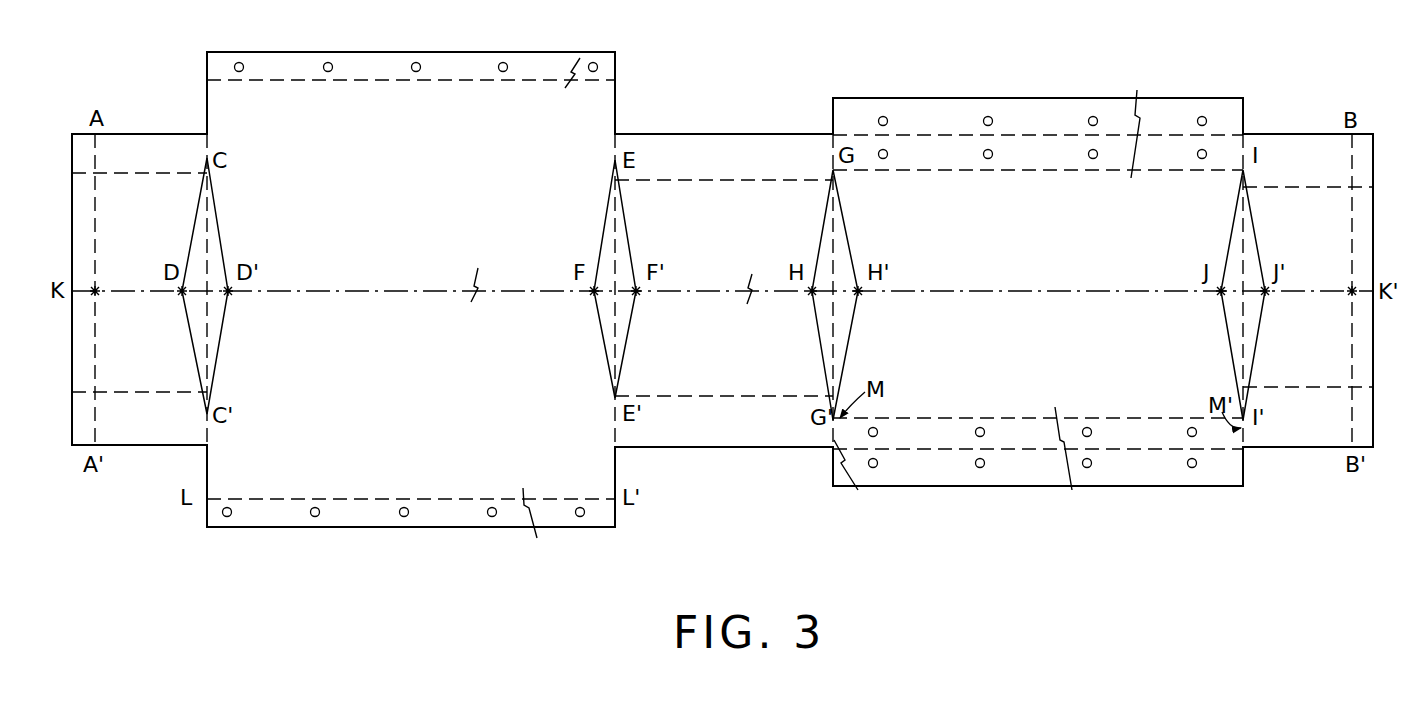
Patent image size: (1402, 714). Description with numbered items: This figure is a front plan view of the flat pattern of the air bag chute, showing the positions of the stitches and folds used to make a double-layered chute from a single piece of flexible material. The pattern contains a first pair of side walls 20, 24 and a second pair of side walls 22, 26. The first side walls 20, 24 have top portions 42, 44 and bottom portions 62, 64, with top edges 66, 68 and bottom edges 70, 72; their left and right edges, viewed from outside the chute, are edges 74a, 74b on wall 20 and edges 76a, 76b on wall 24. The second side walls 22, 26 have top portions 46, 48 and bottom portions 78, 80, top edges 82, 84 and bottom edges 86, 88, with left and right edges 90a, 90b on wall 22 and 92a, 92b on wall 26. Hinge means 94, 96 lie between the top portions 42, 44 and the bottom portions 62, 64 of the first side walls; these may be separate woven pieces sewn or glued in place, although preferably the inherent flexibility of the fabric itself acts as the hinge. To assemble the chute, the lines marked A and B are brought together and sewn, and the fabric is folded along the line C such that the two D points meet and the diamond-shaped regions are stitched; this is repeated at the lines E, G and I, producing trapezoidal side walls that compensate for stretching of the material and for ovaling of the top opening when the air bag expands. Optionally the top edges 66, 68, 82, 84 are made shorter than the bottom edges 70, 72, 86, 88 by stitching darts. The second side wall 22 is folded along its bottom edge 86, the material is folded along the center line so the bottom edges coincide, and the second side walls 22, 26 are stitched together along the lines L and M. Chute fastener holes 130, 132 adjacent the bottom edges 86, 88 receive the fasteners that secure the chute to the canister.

The first side wall 20 is at (125, 448).
The second side wall 22 is at (1012, 489).
The first side wall 24 is at (773, 450).
The second side wall 26 is at (243, 530).
The top portion 42 is at (140, 306).
The top portion 44 is at (745, 290).
The top portion 46 is at (950, 318).
The top portion 48 is at (455, 310).
The bottom portion 62 is at (173, 148).
The bottom portion 64 is at (781, 148).
The top edge 66 is at (117, 294).
The top edge 68 is at (660, 296).
The bottom edge 70 is at (128, 132).
The bottom edge 72 is at (727, 134).
The left edge 74a is at (1248, 440).
The right edge 74b is at (203, 413).
The left edge 76a is at (618, 138).
The right edge 76b is at (831, 130).
The bottom portion 78 is at (1106, 294).
The bottom portion 80 is at (580, 58).
The top edge 82 is at (975, 295).
The top edge 84 is at (320, 295).
The bottom edge 86 is at (1214, 132).
The bottom edge 88 is at (527, 52).
The left edge 90a is at (852, 505).
The right edge 90b is at (1233, 465).
The left edge 92a is at (210, 466).
The right edge 92b is at (610, 485).
The hinge means 94 is at (153, 175).
The hinge means 96 is at (718, 183).
The chute fastener holes 130 is at (1088, 118).
The chute fastener holes 132 is at (324, 62).